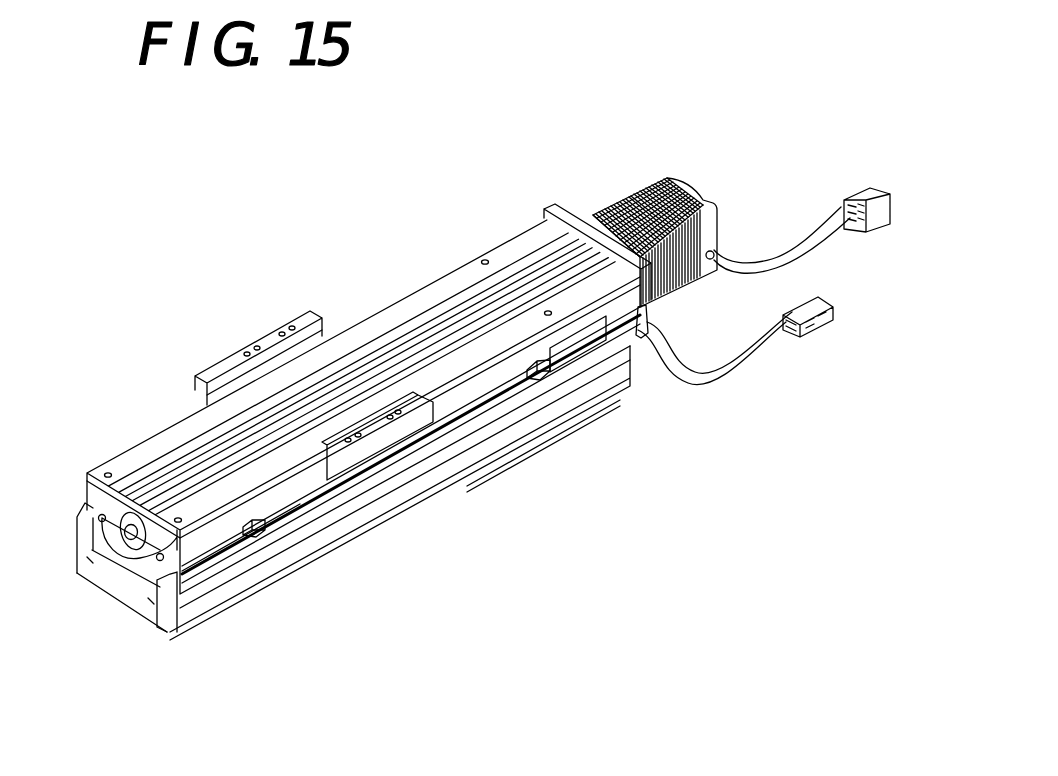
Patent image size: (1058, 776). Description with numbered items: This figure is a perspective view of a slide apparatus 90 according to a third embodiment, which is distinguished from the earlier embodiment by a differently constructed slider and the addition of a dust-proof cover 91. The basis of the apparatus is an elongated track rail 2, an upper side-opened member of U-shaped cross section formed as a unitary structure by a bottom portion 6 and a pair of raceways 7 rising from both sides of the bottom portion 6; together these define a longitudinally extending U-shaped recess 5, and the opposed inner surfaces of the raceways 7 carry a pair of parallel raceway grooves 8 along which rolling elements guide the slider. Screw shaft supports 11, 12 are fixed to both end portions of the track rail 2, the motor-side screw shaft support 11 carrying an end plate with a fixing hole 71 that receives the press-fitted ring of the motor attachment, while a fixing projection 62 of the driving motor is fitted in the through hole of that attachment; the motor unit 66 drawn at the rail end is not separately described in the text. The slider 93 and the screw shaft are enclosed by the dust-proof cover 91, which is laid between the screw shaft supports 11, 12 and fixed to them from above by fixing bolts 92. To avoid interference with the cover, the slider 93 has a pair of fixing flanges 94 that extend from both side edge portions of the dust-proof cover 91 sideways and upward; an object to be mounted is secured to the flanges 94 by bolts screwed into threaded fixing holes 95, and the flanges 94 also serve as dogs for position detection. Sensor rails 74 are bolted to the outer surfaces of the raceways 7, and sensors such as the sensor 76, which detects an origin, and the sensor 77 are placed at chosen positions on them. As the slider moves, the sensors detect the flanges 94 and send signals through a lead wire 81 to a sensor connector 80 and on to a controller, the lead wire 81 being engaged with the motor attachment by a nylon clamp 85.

The track rail 2 is at (318, 548).
The U-shaped recess 5 is at (125, 570).
The bottom portion 6 is at (100, 583).
The raceways 7 is at (80, 538).
The raceway grooves 8 is at (75, 573).
The motor-side screw shaft support 11 is at (575, 327).
The screw shaft support 12 is at (95, 500).
The fixing projection 62 is at (853, 191).
The motor 66 is at (667, 190).
The fixing hole 71 is at (318, 470).
The sensor rails 74 is at (470, 427).
The sensor 76 is at (542, 375).
The sensor 77 is at (265, 537).
The sensor connector 80 is at (827, 322).
The lead wire 81 is at (733, 362).
The nylon clamp 85 is at (650, 320).
The slide apparatus 90 is at (539, 463).
The dust-proof cover 91 is at (423, 297).
The fixing bolts 92 is at (484, 259).
The slider 93 is at (264, 329).
The fixing flanges 94 is at (305, 333).
The threaded fixing holes 95 is at (240, 373).